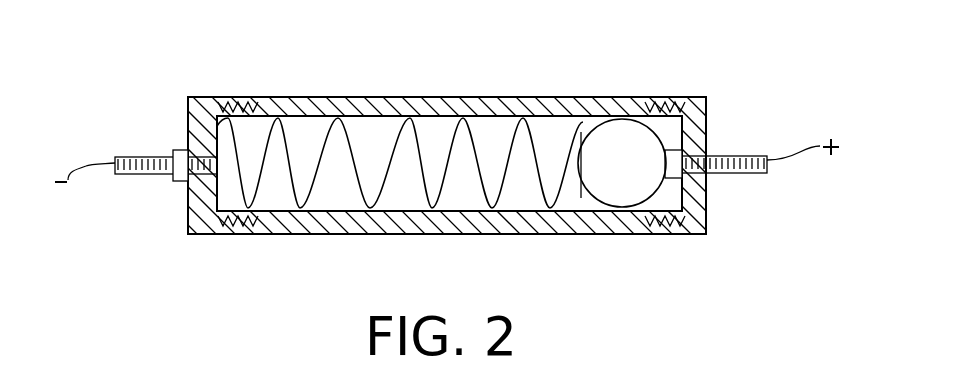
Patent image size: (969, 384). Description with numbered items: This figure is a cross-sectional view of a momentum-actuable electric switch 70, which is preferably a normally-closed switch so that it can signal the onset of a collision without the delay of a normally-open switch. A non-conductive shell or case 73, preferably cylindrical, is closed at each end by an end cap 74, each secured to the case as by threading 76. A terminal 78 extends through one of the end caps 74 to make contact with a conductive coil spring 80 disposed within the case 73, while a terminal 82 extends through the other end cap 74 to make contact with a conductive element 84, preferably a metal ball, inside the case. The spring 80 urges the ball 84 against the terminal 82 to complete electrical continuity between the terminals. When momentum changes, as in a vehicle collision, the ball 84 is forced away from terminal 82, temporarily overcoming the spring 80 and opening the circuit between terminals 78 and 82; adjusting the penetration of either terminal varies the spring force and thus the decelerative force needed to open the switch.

The switch 70 is at (545, 62).
The case 73 is at (362, 100).
The end cap 74 is at (188, 118).
The threading 76 is at (232, 108).
The terminal 78 is at (158, 175).
The conductive coil spring 80 is at (285, 212).
The terminal 82 is at (743, 173).
The conductive element 84 is at (619, 186).